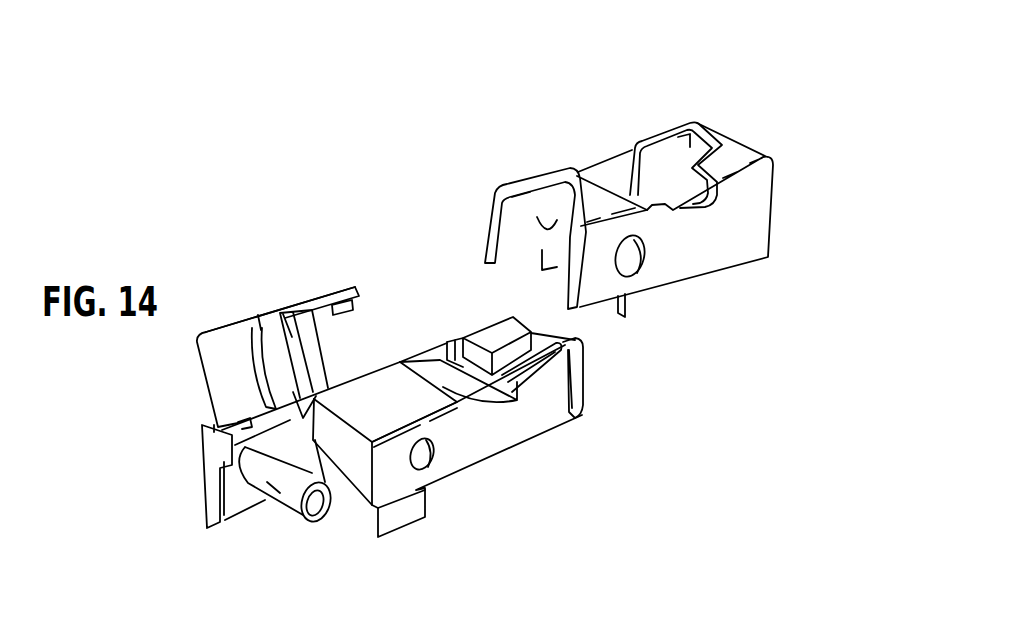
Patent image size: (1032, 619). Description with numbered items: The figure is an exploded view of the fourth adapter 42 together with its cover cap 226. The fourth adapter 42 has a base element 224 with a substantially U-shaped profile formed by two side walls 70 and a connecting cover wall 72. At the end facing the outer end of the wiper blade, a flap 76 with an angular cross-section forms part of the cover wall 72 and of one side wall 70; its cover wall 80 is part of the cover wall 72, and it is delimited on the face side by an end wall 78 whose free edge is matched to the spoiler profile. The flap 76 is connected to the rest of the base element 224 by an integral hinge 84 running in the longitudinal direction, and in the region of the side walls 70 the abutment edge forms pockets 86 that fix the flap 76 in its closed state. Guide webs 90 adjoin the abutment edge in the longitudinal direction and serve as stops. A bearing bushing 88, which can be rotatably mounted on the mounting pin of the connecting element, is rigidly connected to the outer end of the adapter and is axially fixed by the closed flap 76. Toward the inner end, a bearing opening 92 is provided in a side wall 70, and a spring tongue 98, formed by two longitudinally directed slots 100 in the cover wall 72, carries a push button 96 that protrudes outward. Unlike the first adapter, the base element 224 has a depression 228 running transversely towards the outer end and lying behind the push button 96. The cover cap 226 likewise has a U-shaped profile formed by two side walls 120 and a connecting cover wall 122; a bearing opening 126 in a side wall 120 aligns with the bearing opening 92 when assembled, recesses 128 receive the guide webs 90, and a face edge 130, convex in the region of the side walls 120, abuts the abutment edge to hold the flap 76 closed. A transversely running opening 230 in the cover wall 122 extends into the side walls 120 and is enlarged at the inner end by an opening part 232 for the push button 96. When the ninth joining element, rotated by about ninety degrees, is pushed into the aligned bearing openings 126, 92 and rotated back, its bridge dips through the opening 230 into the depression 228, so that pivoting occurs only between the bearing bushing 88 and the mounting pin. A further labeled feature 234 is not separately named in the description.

The fourth adapter 42 is at (176, 489).
The side wall 70 is at (498, 428).
The cover wall 72 is at (380, 398).
The flap 76 is at (243, 299).
The end wall 78 is at (228, 380).
The cover wall of the flap 80 is at (334, 440).
The integral hinge 84 is at (232, 449).
The pockets 86 is at (328, 318).
The bearing bushing 88 is at (280, 503).
The guide webs 90 is at (405, 508).
The bearing opening 92 is at (430, 462).
The push button 96 is at (495, 337).
The spring tongue 98 is at (531, 332).
The slots 100 is at (580, 378).
The side walls of the cover cap 120 is at (714, 241).
The cover wall of the cover cap 122 is at (565, 190).
The bearing opening 126 is at (641, 262).
The recesses 128 is at (601, 308).
The face edge 130 is at (490, 221).
The base element 224 is at (302, 275).
The cover cap 226 is at (790, 208).
The depression 228 is at (443, 373).
The opening 230 is at (652, 183).
The opening part 232 is at (705, 148).
The surface 234 is at (605, 170).